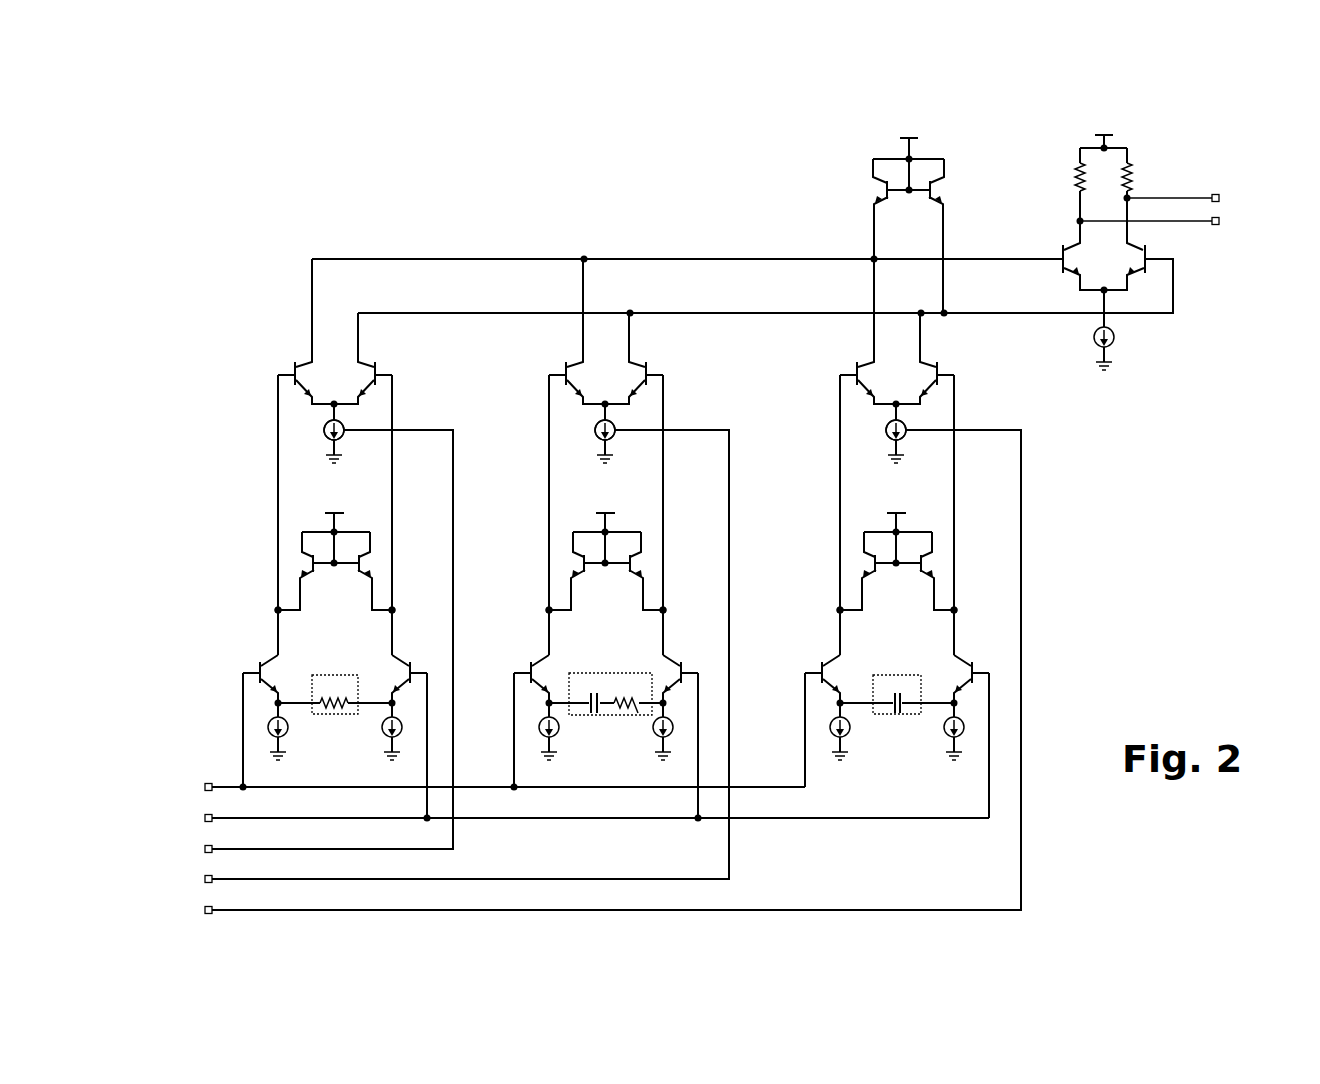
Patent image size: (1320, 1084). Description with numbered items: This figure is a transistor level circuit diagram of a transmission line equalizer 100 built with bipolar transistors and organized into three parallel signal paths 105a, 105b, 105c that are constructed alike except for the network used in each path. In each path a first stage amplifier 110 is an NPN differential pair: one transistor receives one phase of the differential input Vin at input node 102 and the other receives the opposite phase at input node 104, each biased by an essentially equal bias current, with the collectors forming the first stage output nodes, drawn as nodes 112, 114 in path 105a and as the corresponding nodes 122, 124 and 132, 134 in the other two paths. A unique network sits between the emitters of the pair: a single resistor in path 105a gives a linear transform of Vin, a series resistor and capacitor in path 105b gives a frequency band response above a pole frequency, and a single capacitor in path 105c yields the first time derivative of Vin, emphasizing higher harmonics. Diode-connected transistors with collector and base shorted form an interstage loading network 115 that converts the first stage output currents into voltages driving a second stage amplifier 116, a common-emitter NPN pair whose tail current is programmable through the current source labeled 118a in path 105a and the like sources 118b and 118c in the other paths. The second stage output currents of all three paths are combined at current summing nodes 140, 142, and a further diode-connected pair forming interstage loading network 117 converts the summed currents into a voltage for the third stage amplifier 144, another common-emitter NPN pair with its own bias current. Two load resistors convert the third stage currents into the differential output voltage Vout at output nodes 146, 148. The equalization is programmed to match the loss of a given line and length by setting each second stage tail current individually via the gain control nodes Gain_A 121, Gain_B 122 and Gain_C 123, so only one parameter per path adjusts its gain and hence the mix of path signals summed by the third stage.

The transmission line equalizer 100 is at (227, 179).
The input node 102 is at (213, 792).
The input node 104 is at (213, 823).
The signal path 105a is at (273, 248).
The signal path 105b is at (550, 248).
The signal path 105c is at (962, 248).
The first stage amplifier 110 is at (208, 615).
The first node of first stage 112 is at (278, 611).
The second node of first stage 114 is at (392, 611).
The interstage loading network 115 is at (208, 493).
The second stage amplifier 116 is at (208, 340).
The interstage loading network 117 is at (858, 148).
The first gain control current source I3 118a is at (344, 436).
The second gain control current source I6 118b is at (615, 436).
The third gain control current source I9 118c is at (906, 436).
The gain control node Gain_A 121 is at (213, 854).
The gain control node Gain_B 122 is at (213, 884).
The gain control node Gain_C 123 is at (213, 915).
The second node of second stage 124 is at (663, 611).
The first node of third stage 132 is at (840, 611).
The second node of third stage 134 is at (954, 611).
The current summing node 140 is at (693, 258).
The current summing node 142 is at (735, 312).
The third stage amplifier 144 is at (1188, 291).
The output node 146 is at (1219, 192).
The output node 148 is at (1219, 227).